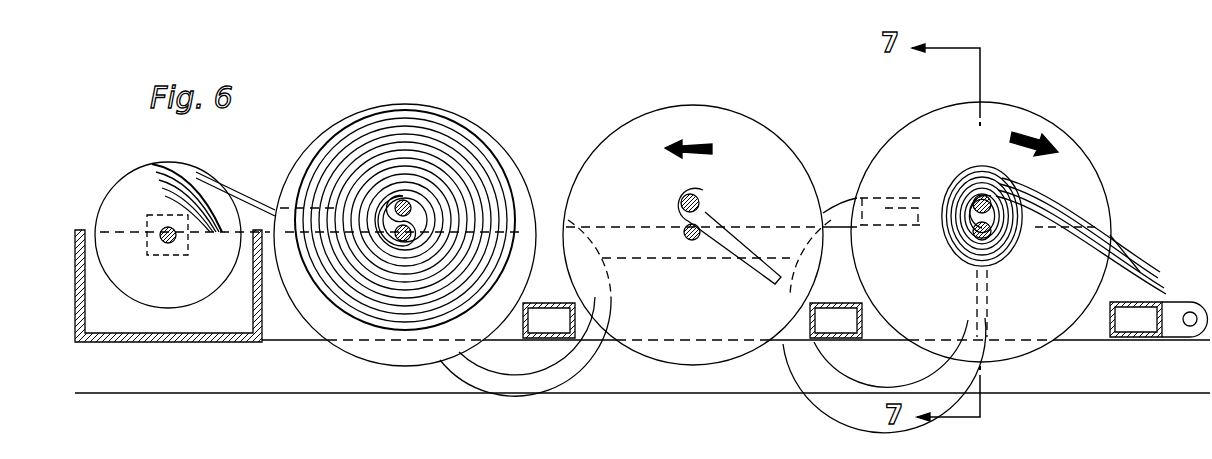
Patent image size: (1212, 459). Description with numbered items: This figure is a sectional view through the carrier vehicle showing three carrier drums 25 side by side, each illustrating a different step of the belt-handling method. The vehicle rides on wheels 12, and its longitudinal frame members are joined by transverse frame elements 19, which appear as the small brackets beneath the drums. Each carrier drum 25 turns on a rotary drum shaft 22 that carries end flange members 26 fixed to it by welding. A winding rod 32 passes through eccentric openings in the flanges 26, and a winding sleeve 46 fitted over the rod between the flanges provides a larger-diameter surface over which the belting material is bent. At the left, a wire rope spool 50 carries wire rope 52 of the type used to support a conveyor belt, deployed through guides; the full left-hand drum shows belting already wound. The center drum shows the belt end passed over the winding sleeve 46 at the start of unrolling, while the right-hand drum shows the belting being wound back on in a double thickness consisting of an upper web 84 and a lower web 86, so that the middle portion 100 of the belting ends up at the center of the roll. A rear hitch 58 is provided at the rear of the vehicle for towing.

The wheels 12 is at (458, 373).
The transverse frame elements 19 is at (548, 303).
The rotary drum shaft 22 is at (684, 238).
The carrier drum 25 is at (366, 360).
The end flange members 26 is at (797, 153).
The winding rod 32 is at (708, 207).
The winding sleeve 46 is at (700, 194).
The wire rope spools 50 is at (140, 181).
The wire rope 52 is at (240, 197).
The rear hitch 58 is at (1176, 330).
The upper web 84 is at (1156, 270).
The lower web 86 is at (1164, 293).
The middle portion 100 is at (684, 196).